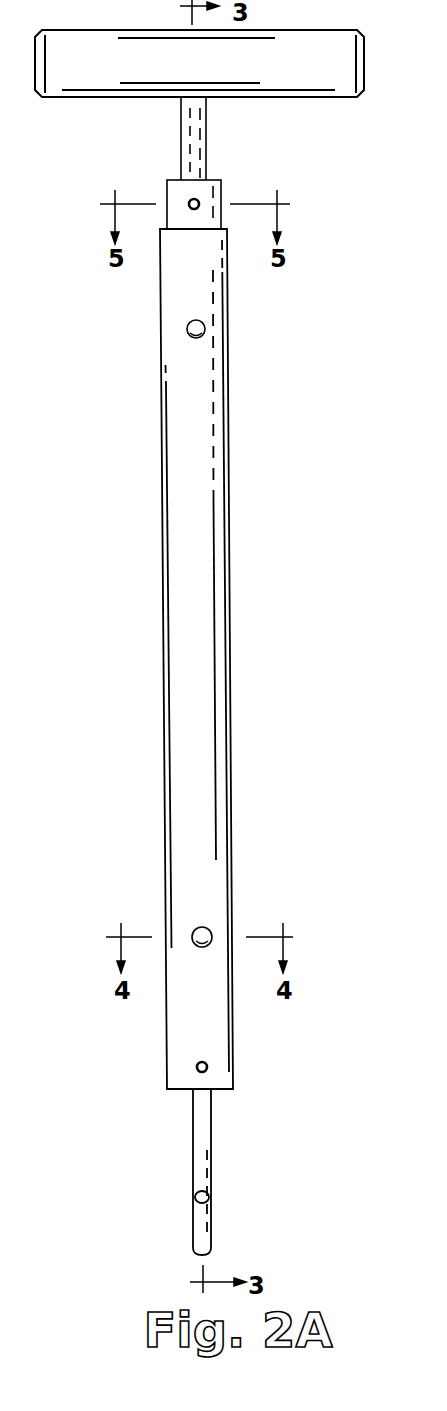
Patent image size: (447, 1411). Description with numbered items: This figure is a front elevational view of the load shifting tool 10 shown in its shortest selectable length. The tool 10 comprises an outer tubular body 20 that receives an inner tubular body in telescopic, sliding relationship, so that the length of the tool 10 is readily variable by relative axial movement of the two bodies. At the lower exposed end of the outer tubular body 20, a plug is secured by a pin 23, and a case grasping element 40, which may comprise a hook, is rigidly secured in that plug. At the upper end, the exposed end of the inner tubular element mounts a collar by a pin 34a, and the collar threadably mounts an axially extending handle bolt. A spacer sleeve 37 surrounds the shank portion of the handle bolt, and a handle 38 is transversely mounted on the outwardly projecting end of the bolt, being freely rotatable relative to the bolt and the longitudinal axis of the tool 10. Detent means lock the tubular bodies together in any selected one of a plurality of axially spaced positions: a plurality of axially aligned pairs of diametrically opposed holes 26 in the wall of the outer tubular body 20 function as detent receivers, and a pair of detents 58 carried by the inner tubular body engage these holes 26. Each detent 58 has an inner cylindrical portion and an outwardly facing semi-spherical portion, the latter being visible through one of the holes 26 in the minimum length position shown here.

The load shifting tool 10 is at (250, 534).
The outer tubular body 20 is at (229, 718).
The pin 23 is at (208, 1066).
The holes 26 is at (187, 328).
The pin 34a is at (191, 198).
The spacer sleeve 37 is at (207, 152).
The handle 38 is at (287, 30).
The case grasping element 40 is at (211, 1146).
The detents 58 is at (200, 938).